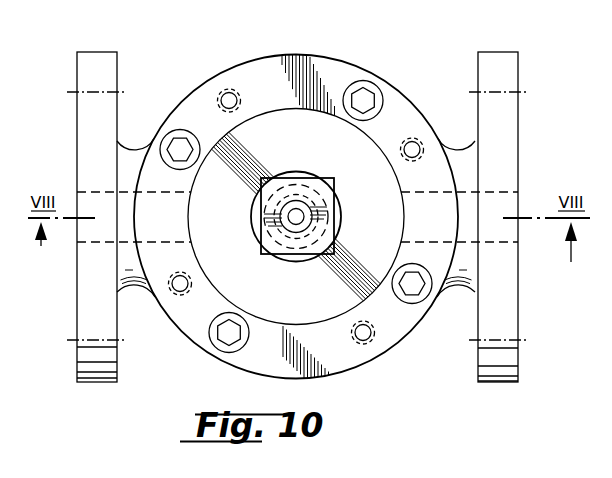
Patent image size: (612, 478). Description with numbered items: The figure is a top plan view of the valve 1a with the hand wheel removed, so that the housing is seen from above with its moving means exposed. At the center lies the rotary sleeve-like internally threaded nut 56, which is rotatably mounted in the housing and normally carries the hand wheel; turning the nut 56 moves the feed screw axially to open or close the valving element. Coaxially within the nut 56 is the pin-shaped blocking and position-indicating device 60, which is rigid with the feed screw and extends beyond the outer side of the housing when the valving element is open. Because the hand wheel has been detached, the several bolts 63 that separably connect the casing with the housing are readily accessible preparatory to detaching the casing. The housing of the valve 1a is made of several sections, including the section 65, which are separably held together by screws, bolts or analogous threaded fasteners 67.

The valve 1a is at (421, 387).
The housing section 65 is at (265, 75).
The bolts 63 is at (364, 95).
The threaded fasteners 67 is at (363, 342).
The blocking and position-indicating device 60 is at (297, 212).
The nut 56 is at (296, 243).